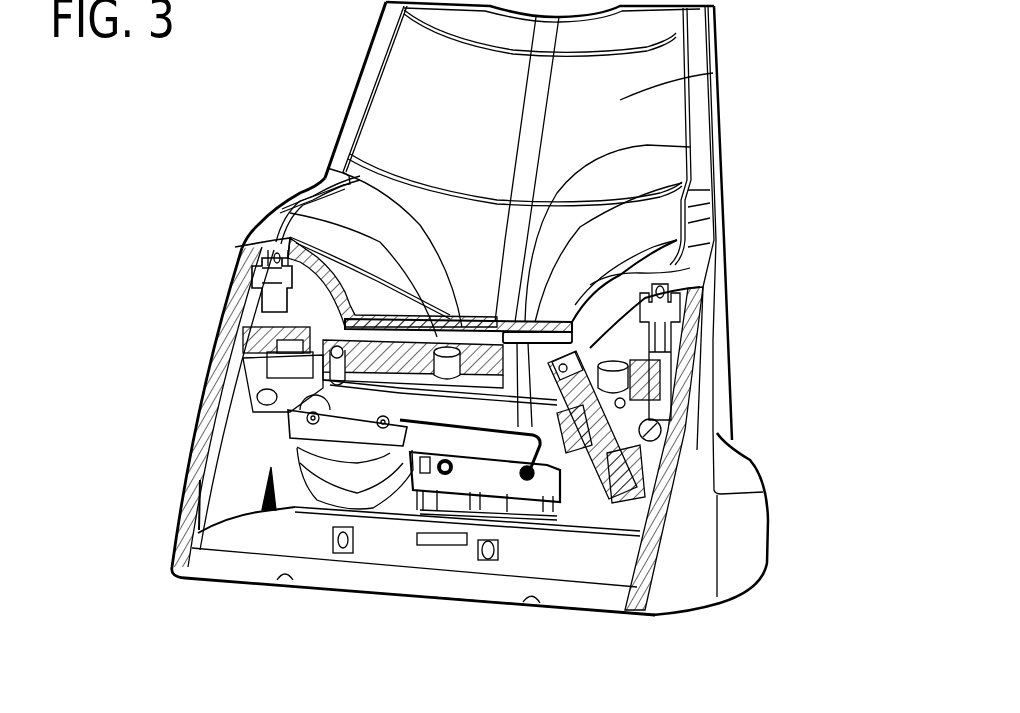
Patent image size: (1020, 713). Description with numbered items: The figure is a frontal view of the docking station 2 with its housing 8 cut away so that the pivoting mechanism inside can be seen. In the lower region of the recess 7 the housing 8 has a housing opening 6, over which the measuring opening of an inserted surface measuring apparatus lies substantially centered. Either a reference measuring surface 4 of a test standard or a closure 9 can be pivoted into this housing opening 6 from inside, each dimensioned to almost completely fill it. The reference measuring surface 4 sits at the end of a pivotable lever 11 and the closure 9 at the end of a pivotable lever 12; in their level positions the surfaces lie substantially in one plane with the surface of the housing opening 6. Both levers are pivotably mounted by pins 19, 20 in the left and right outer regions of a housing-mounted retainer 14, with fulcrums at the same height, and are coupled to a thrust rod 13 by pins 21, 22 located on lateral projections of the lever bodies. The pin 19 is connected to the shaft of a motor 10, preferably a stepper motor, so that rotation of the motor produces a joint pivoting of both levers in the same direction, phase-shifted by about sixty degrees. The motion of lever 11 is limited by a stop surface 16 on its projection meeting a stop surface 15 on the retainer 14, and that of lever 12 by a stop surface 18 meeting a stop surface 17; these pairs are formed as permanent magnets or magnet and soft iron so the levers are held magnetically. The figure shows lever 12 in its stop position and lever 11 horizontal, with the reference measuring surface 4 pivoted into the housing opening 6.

The docking station 2 is at (236, 127).
The reference measuring surface 4 is at (343, 175).
The housing opening 6 is at (290, 213).
The recess 7 is at (713, 73).
The housing 8 is at (733, 418).
The closure 9 is at (597, 523).
The motor 10 is at (323, 468).
The lever 11 is at (293, 305).
The lever 12 is at (700, 447).
The thrust rod 13 is at (717, 193).
The retainer 14 is at (713, 148).
The stop surface 15 is at (260, 378).
The stop surface 16 is at (280, 415).
The stop surface 17 is at (600, 343).
The stop surface 18 is at (662, 410).
The pin 19 is at (275, 335).
The pin 20 is at (690, 250).
The pin 21 is at (390, 433).
The pin 22 is at (573, 523).